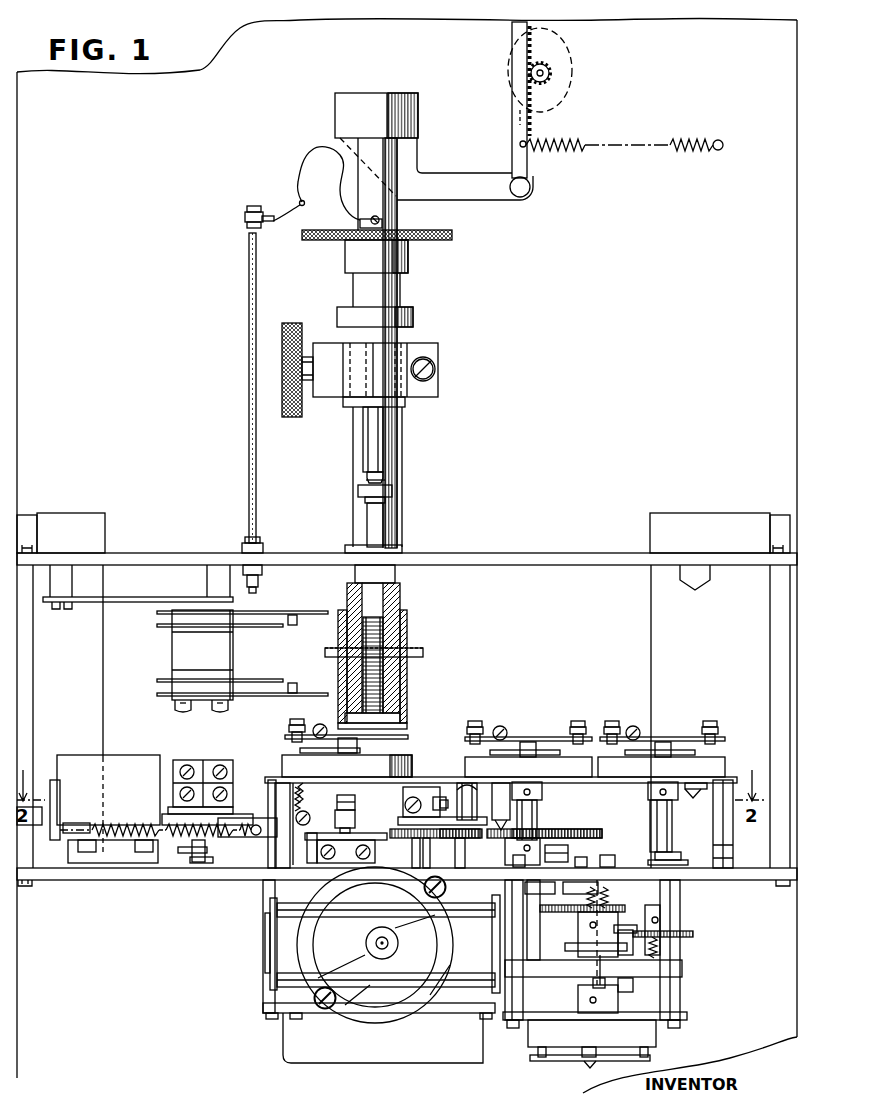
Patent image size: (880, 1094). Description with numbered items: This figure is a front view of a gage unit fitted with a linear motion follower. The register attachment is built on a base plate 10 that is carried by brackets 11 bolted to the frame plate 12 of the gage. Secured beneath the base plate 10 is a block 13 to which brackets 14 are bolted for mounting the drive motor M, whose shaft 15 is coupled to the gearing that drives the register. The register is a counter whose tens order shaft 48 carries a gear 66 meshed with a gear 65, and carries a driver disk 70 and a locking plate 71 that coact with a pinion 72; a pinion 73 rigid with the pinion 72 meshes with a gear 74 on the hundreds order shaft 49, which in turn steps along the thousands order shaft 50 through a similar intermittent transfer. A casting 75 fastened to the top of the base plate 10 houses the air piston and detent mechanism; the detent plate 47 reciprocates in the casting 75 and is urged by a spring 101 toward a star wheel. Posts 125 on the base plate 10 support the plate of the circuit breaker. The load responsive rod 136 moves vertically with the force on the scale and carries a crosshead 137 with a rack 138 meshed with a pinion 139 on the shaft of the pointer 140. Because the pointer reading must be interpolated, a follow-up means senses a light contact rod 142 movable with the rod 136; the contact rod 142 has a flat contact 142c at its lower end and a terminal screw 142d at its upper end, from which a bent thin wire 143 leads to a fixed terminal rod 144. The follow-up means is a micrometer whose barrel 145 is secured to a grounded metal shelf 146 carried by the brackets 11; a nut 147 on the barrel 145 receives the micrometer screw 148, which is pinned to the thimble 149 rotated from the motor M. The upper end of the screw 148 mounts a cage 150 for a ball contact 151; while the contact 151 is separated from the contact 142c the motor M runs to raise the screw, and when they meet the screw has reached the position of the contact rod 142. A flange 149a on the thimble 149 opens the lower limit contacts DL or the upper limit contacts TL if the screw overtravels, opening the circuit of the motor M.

The base plate 10 is at (120, 873).
The brackets 11 is at (30, 641).
The frame plate 12 is at (208, 78).
The block 13 is at (265, 990).
The brackets 14 is at (273, 943).
The shaft 15 is at (384, 950).
The drive motor M is at (380, 1013).
The detent plate 47 is at (90, 820).
The tens order shaft 48 is at (530, 817).
The hundreds order shaft 49 is at (601, 990).
The thousands order shaft 50 is at (660, 812).
The gear 65 is at (468, 873).
The gear 66 is at (577, 838).
The driver disk 70 is at (565, 944).
The locking plate 71 is at (506, 896).
The pinion 72 is at (595, 905).
The pinion 73 is at (608, 923).
The gear 74 is at (607, 913).
The casting 75 is at (137, 764).
The spring 101 is at (140, 820).
The posts 125 is at (442, 868).
The rod 136 is at (362, 191).
The crosshead 137 is at (490, 175).
The rack 138 is at (520, 112).
The pinion 139 is at (549, 80).
The pointer 140 is at (576, 61).
The contact rod 142 is at (372, 434).
The contact 142c is at (392, 479).
The terminal screw 142d is at (384, 220).
The wire 143 is at (300, 201).
The terminal rod 144 is at (258, 276).
The barrel 145 is at (401, 591).
The metal shelf 146 is at (485, 558).
The nut 147 is at (388, 691).
The micrometer screw 148 is at (373, 530).
The micrometer thimble 149 is at (401, 704).
The flange 149a is at (425, 656).
The cage 150 is at (391, 494).
The ball contact 151 is at (366, 481).
The upper limit contacts TL is at (306, 641).
The lower limit contacts DL is at (308, 667).